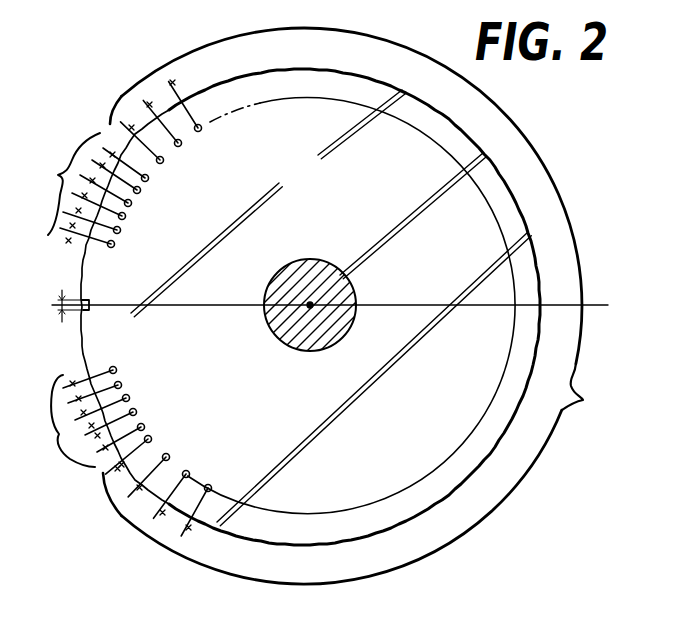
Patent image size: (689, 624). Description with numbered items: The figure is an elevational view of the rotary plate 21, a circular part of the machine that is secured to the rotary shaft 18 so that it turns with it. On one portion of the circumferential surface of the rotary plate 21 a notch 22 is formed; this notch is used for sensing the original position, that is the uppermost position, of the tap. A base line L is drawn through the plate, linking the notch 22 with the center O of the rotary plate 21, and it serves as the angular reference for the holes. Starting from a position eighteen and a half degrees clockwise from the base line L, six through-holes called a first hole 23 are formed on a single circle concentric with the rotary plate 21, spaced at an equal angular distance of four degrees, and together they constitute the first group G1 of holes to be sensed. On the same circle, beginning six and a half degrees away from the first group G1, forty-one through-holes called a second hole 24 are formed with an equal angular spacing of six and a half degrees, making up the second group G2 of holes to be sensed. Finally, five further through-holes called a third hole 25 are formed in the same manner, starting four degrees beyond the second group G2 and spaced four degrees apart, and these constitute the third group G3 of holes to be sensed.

The rotary shaft 18 is at (312, 258).
The rotary plate 21 is at (324, 191).
The notch 22 is at (92, 303).
The first hole 23 is at (111, 244).
The second hole 24 is at (160, 160).
The third hole 25 is at (141, 427).
The center O is at (312, 307).
The base line L is at (211, 284).
The first group of holes G1 is at (64, 184).
The second group of holes G2 is at (351, 306).
The third group of holes G3 is at (58, 425).